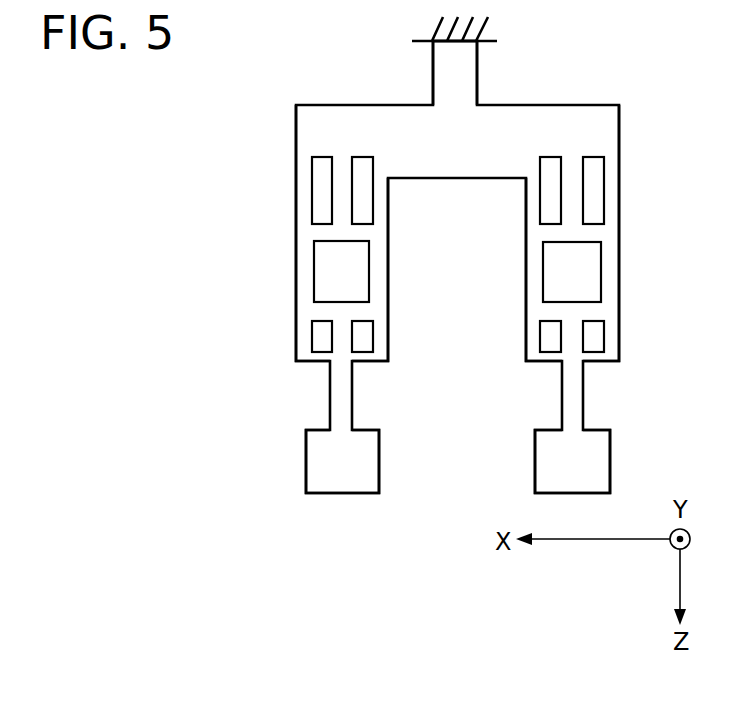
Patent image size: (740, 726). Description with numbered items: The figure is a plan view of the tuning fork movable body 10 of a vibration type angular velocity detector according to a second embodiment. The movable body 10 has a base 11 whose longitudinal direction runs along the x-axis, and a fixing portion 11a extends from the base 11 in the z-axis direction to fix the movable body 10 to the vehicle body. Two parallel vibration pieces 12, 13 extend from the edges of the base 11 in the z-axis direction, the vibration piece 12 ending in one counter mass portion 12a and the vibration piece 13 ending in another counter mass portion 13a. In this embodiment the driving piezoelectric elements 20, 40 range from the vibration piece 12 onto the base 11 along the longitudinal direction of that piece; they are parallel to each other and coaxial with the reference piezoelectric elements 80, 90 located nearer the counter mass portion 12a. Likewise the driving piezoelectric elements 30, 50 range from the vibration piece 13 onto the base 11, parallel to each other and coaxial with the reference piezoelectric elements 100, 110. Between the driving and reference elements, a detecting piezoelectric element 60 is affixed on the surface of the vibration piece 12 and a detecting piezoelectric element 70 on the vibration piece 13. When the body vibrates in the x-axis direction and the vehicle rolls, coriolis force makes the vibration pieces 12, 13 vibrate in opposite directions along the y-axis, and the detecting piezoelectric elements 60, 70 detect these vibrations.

The movable body 10 is at (309, 501).
The base 11 is at (432, 141).
The fixing portion 11a is at (466, 71).
The vibration piece 12 is at (622, 303).
The vibration piece 13 is at (390, 262).
The counter mass portion 12a is at (598, 460).
The counter mass portion 13a is at (370, 458).
The driving piezoelectric element 20 is at (548, 200).
The driving piezoelectric element 30 is at (364, 207).
The driving piezoelectric element 40 is at (597, 192).
The driving piezoelectric element 50 is at (317, 193).
The detecting piezoelectric element 60 is at (590, 262).
The detecting piezoelectric element 70 is at (322, 250).
The reference piezoelectric element 80 is at (597, 338).
The reference piezoelectric element 90 is at (548, 337).
The reference piezoelectric element 100 is at (364, 337).
The reference piezoelectric element 110 is at (318, 333).